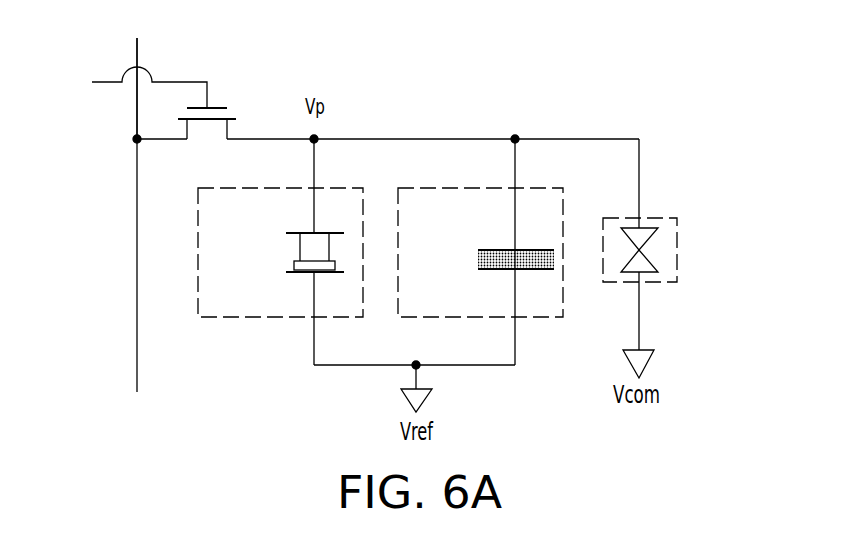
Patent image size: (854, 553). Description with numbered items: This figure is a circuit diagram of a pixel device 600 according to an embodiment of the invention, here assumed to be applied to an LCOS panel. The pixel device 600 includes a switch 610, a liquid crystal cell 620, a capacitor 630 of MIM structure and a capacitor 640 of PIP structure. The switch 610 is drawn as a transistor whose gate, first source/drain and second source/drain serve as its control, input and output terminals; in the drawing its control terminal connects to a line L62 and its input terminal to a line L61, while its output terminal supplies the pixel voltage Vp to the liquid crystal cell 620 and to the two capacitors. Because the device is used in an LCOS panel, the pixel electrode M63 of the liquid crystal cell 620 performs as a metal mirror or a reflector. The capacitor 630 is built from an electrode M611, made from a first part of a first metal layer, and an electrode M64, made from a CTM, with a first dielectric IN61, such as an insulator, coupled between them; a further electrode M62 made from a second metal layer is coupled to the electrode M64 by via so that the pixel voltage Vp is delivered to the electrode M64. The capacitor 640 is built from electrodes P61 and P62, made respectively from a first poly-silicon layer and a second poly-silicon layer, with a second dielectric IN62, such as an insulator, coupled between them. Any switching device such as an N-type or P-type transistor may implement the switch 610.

The data line L61 is at (112, 83).
The scan line L62 is at (137, 52).
The switch 610 is at (208, 133).
The capacitor 630 is at (268, 320).
The electrode M62 is at (300, 233).
The electrode M64 is at (298, 258).
The first dielectric IN61 is at (294, 265).
The electrode M611 is at (302, 273).
The capacitor 640 is at (468, 320).
The electrode P62 is at (500, 250).
The second dielectric IN62 is at (478, 260).
The electrode P61 is at (500, 270).
The liquid crystal cell 620 is at (677, 259).
The pixel electrode M63 is at (648, 228).
The pixel device 600 is at (762, 420).